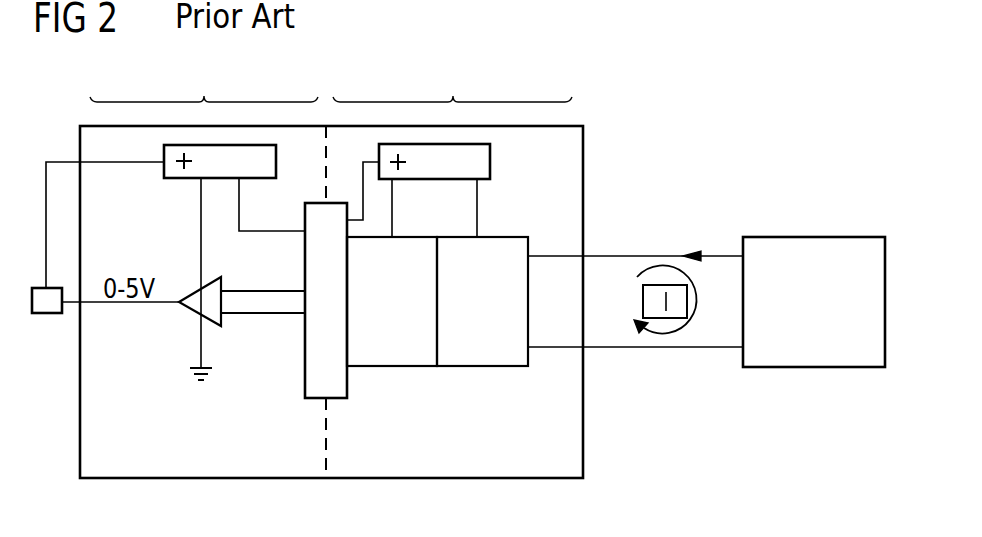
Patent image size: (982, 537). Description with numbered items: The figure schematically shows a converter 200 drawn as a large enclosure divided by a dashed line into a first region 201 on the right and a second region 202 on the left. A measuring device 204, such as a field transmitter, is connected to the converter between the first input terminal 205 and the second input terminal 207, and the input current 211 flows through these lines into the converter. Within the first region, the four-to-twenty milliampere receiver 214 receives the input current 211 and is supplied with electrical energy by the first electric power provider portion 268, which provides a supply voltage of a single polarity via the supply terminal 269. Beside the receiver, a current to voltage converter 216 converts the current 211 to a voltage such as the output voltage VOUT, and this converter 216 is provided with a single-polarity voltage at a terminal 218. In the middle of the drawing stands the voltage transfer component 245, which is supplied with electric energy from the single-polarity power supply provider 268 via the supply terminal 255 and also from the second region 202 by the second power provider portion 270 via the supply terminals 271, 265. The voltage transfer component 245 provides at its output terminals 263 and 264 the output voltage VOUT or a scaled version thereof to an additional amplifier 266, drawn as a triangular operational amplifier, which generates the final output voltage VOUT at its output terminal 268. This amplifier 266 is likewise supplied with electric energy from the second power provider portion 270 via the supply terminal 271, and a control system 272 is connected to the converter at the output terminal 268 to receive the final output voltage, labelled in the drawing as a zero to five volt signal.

The converter 200 is at (786, 97).
The drive unit 201 is at (452, 82).
The second region 202 is at (204, 82).
The measuring device 204 is at (326, 442).
The first input terminal 205 is at (528, 258).
The second input terminal 207 is at (528, 348).
The input current 211 is at (680, 254).
The 4-20 mA receiver 214 is at (484, 366).
The current to voltage converter 216 is at (392, 366).
The terminal 218 is at (394, 237).
The voltage transfer component 245 is at (305, 378).
The supply terminal 255 is at (348, 223).
The output terminal 263 is at (305, 290).
The output terminal 264 is at (305, 320).
The supply terminal 265 is at (305, 229).
The additional amplifier 266 is at (188, 298).
The first electric power provider portion 268 is at (186, 305).
The supply terminal 269 is at (478, 180).
The second power provider portion 270 is at (164, 169).
The supply terminal 271 is at (232, 179).
The control system 272 is at (46, 314).